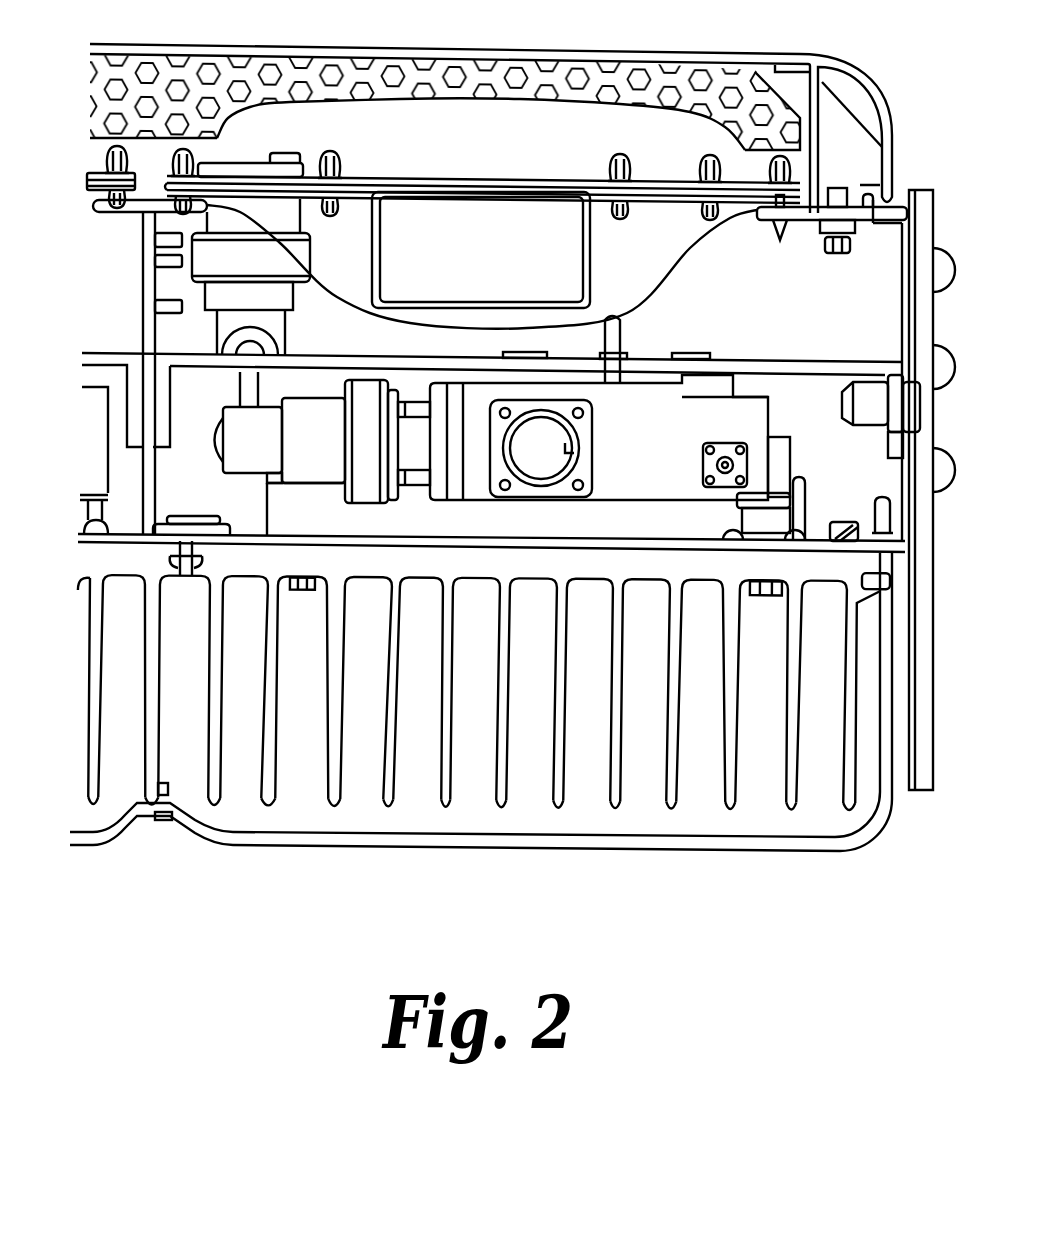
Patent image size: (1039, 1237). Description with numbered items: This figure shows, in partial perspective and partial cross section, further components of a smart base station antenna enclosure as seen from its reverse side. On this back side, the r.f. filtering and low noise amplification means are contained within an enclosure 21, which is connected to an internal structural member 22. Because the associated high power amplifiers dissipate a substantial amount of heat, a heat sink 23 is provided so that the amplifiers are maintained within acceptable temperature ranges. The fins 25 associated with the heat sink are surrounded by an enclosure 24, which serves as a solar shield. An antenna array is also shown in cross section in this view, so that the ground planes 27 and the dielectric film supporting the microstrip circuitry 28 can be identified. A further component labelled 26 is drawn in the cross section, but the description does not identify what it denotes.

The enclosure 21 is at (680, 420).
The internal structural member 22 is at (818, 368).
The heat sink 23 is at (482, 723).
The enclosure 24 is at (557, 850).
The fins 25 is at (447, 728).
The cover plate 26 is at (667, 180).
The ground planes 27 is at (443, 188).
The dielectric film supporting microstrip circuitry 28 is at (497, 183).